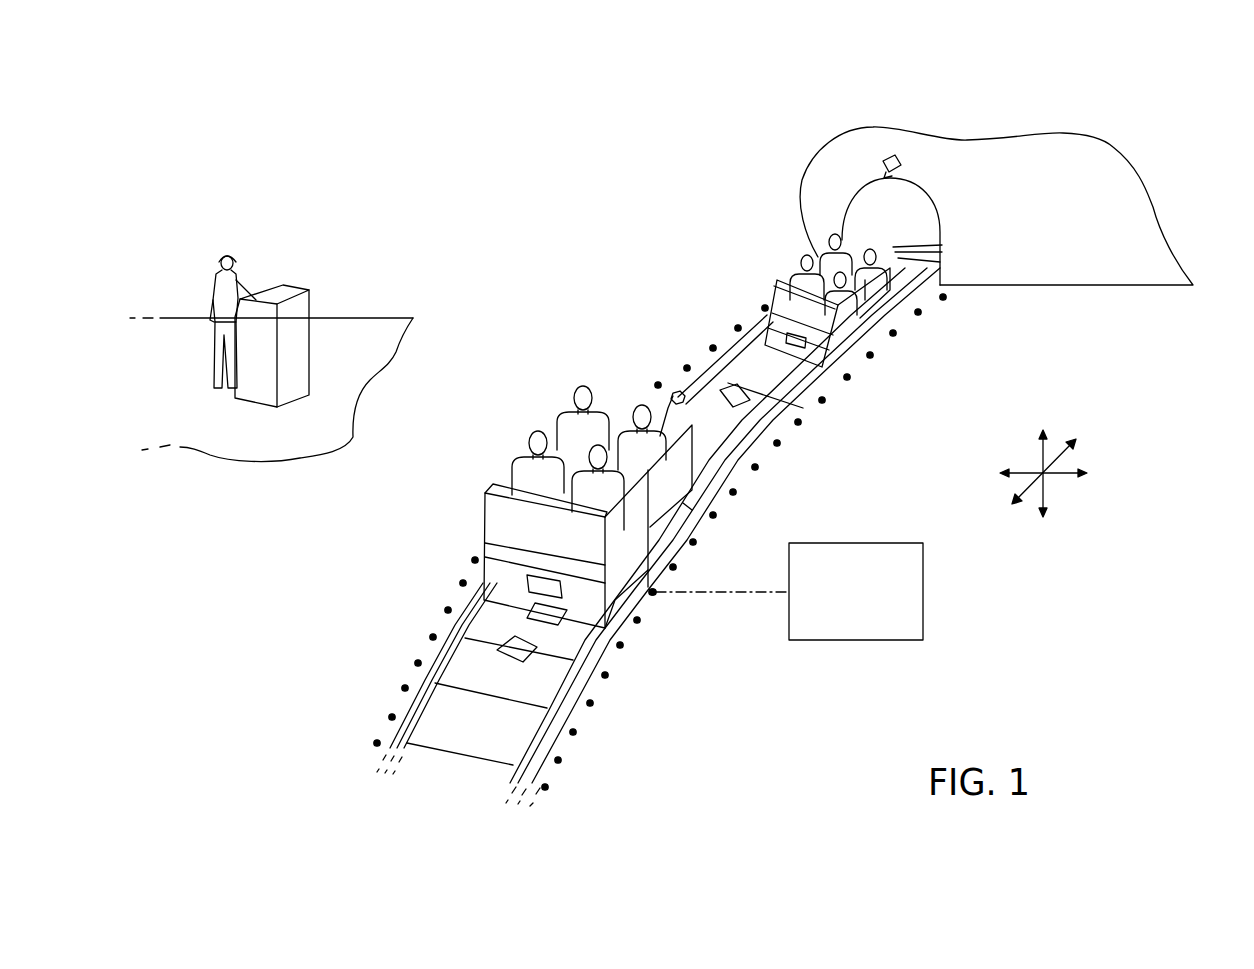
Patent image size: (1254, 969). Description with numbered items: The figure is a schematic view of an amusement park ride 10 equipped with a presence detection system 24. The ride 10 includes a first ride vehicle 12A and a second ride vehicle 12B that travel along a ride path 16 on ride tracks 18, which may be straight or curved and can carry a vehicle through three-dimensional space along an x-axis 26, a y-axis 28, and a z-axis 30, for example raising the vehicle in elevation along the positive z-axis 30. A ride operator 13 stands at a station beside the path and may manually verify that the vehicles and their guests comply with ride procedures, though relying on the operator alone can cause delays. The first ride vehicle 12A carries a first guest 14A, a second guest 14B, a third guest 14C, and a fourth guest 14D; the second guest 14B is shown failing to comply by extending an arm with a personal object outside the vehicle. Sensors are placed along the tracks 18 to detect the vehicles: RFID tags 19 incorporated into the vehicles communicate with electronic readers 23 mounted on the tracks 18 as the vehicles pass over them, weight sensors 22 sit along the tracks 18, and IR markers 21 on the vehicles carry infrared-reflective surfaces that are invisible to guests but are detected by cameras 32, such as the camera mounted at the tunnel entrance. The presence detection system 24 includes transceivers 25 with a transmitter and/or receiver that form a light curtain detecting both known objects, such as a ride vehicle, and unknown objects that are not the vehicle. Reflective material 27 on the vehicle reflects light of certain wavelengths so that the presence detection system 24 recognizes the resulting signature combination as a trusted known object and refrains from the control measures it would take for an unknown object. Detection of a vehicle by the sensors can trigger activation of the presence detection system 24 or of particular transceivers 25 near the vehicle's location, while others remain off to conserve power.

The amusement park ride 10 is at (318, 118).
The ride operator 13 is at (212, 290).
The first ride vehicle 12A is at (703, 445).
The second ride vehicle 12B is at (902, 285).
The first guest 14A is at (573, 423).
The second guest 14B is at (705, 490).
The third guest 14C is at (527, 475).
The fourth guest 14D is at (663, 548).
The ride path 16 is at (783, 377).
The ride tracks 18 is at (773, 420).
The RFID tags 19 is at (532, 615).
The IR markers 21 is at (533, 578).
The weight sensors 22 is at (738, 384).
The electronic readers 23 is at (513, 647).
The presence detection system 24 is at (857, 642).
The transceivers 25 is at (515, 552).
The x-axis 26 is at (1132, 453).
The reflective material 27 is at (690, 508).
The y-axis 28 is at (1033, 532).
The z-axis 30 is at (1052, 393).
The cameras 32 is at (895, 160).